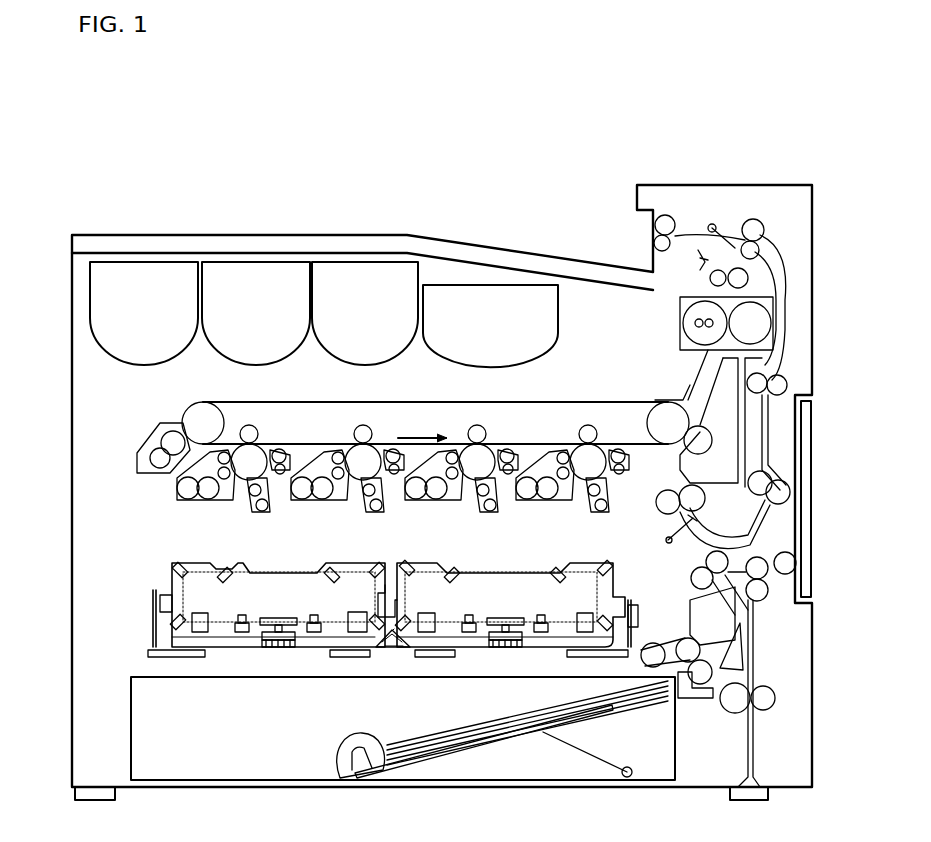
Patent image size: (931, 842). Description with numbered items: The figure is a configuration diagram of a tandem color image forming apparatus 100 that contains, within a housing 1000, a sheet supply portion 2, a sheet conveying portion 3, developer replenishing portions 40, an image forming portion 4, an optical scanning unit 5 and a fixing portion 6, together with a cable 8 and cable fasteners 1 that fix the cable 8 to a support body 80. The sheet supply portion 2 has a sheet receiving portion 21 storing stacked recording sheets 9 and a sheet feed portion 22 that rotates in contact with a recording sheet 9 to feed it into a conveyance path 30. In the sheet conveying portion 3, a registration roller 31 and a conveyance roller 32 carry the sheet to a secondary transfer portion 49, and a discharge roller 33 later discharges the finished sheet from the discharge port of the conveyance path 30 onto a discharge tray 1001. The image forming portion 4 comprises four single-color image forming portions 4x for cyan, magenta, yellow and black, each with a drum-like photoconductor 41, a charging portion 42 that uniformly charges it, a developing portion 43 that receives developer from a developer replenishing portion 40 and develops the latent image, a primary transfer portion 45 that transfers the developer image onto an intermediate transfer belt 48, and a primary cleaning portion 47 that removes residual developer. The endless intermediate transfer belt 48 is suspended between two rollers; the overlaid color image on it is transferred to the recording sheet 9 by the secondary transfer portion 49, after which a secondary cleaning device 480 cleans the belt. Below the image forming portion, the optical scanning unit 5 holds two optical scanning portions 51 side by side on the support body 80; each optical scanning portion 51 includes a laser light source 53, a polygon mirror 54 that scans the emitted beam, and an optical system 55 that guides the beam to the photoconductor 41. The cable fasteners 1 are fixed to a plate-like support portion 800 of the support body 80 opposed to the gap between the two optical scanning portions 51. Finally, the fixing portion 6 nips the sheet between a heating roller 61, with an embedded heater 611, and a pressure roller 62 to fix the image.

The image forming apparatus 100 is at (112, 188).
The housing 1000 is at (72, 543).
The discharge tray 1001 is at (519, 255).
The developer replenishing portion 40 is at (158, 262).
The image forming portion 4 is at (436, 446).
The single-color image forming portion 4x is at (266, 440).
The intermediate transfer belt 48 is at (200, 403).
The secondary cleaning device 480 is at (137, 457).
The primary transfer portion 45 is at (255, 430).
The secondary transfer portion 49 is at (713, 440).
The photoconductor 41 is at (246, 444).
The charging portion 42 is at (258, 513).
The developing portion 43 is at (212, 501).
The primary cleaning portion 47 is at (279, 472).
The optical scanning unit 5 is at (346, 627).
The optical scanning portion 51 is at (172, 563).
The optical system 55 is at (228, 578).
The laser light source 53 is at (209, 626).
The polygon mirror 54 is at (305, 650).
The cable 8 is at (373, 660).
The support body 80 is at (152, 628).
The plate-like support portion 800 is at (398, 652).
The cable fastener 1 is at (413, 633).
The sheet supply portion 2 is at (364, 709).
The sheet receiving portion 21 is at (131, 755).
The recording sheet 9 is at (468, 730).
The sheet feed portion 22 is at (680, 690).
The sheet conveying portion 3 is at (706, 471).
The conveyance path 30 is at (716, 596).
The registration roller 31 is at (708, 497).
The conveyance roller 32 is at (733, 557).
The discharge roller 33 is at (660, 215).
The fixing portion 6 is at (740, 332).
The heating roller 61 is at (683, 324).
The heater 611 is at (700, 330).
The pressure roller 62 is at (768, 337).